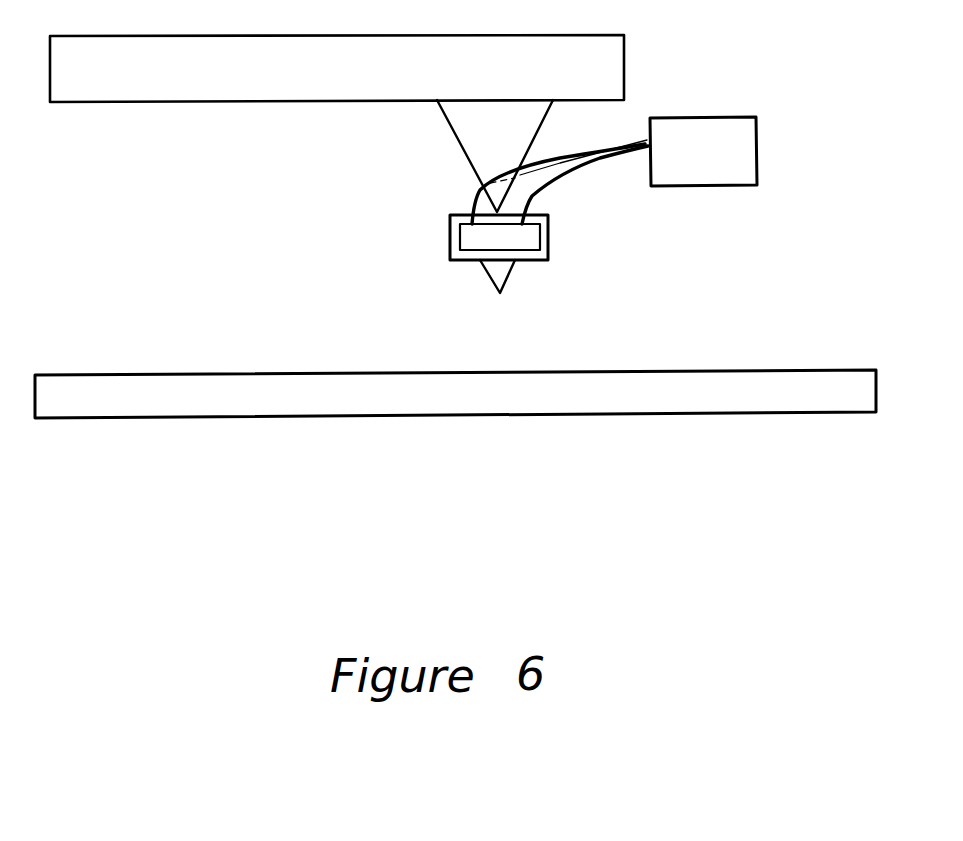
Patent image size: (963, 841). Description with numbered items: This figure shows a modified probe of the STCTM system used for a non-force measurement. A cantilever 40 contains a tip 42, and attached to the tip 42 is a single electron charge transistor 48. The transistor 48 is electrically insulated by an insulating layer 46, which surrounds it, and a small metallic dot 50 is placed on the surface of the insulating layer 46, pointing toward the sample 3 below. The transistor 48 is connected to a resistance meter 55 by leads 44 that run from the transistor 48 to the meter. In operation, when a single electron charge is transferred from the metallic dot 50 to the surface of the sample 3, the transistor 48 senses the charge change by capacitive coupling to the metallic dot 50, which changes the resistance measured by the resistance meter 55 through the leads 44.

The cantilever 40 is at (337, 70).
The tip 42 is at (495, 156).
The leads 44 is at (605, 145).
The insulating layer 46 is at (552, 243).
The single electron charge transistor 48 is at (478, 233).
The metallic dot 50 is at (520, 280).
The resistance meter 55 is at (703, 151).
The sample 3 is at (455, 394).